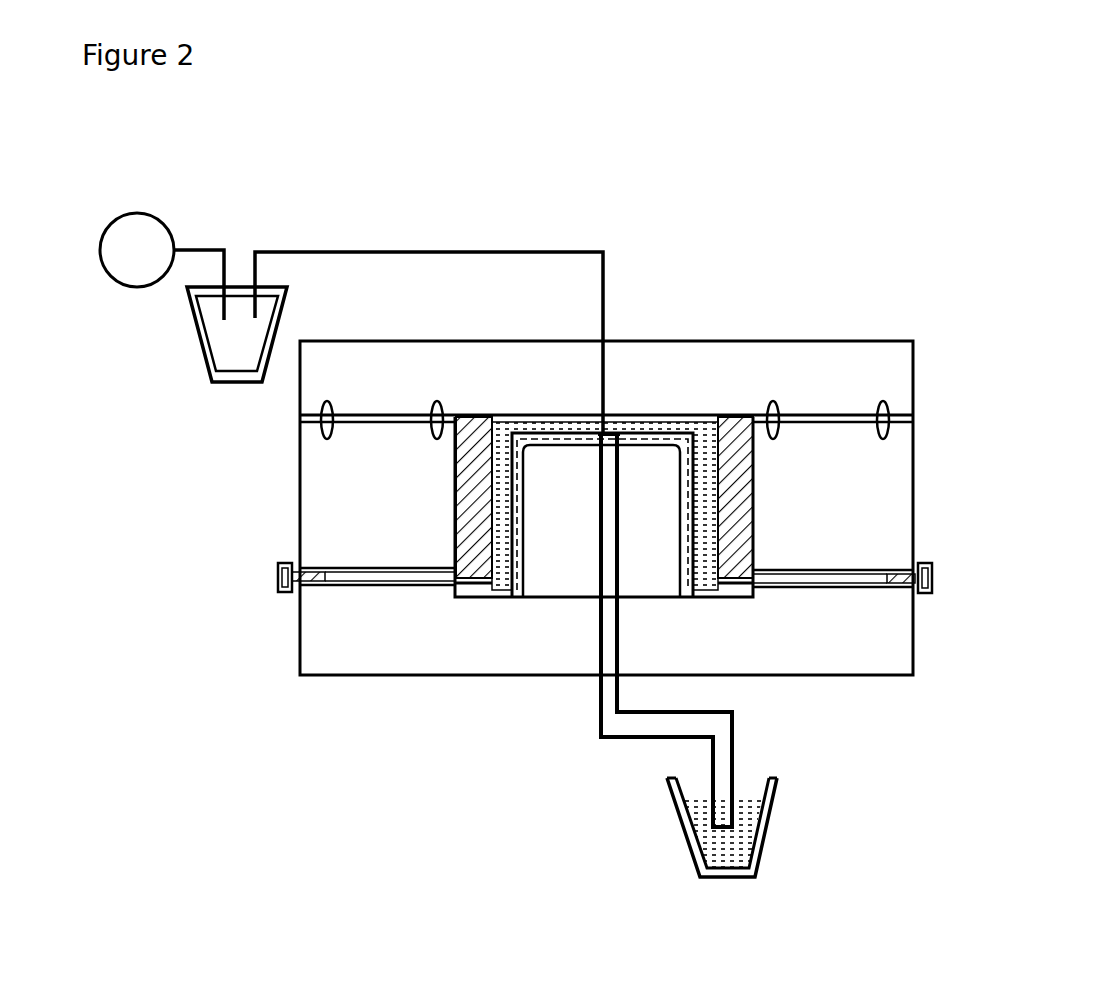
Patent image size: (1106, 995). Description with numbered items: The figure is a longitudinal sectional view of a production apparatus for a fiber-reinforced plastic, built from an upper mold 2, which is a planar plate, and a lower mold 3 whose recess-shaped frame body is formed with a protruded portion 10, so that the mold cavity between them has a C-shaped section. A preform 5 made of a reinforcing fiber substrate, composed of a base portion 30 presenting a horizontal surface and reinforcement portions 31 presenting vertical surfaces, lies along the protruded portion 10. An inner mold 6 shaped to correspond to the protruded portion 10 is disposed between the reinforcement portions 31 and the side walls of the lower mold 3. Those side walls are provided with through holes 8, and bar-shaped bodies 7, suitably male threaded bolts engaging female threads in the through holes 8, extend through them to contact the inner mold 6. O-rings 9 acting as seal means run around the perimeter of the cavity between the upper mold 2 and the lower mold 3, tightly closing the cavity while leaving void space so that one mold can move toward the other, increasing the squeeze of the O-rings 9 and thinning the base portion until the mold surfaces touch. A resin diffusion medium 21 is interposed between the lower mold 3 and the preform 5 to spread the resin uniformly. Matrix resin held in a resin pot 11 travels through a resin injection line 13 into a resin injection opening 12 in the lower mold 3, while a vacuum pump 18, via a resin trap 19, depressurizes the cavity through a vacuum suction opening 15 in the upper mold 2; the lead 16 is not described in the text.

The upper mold 2 is at (748, 362).
The lower mold 3 is at (857, 663).
The preform 5 is at (490, 412).
The inner mold 6 is at (467, 575).
The bar-shaped body 7 is at (277, 583).
The through hole 8 is at (363, 586).
The O-ring 9 is at (913, 414).
The protruded portion 10 is at (577, 565).
The resin pot 11 is at (767, 826).
The resin injection opening 12 is at (620, 410).
The resin injection line 13 is at (653, 725).
The vacuum suction opening 15 is at (600, 413).
The electrical lead 16 is at (385, 250).
The vacuum pump 18 is at (137, 290).
The resin trap 19 is at (223, 343).
The resin diffusion medium 21 is at (510, 597).
The base portion 30 is at (640, 410).
The reinforcement portion 31 is at (718, 515).